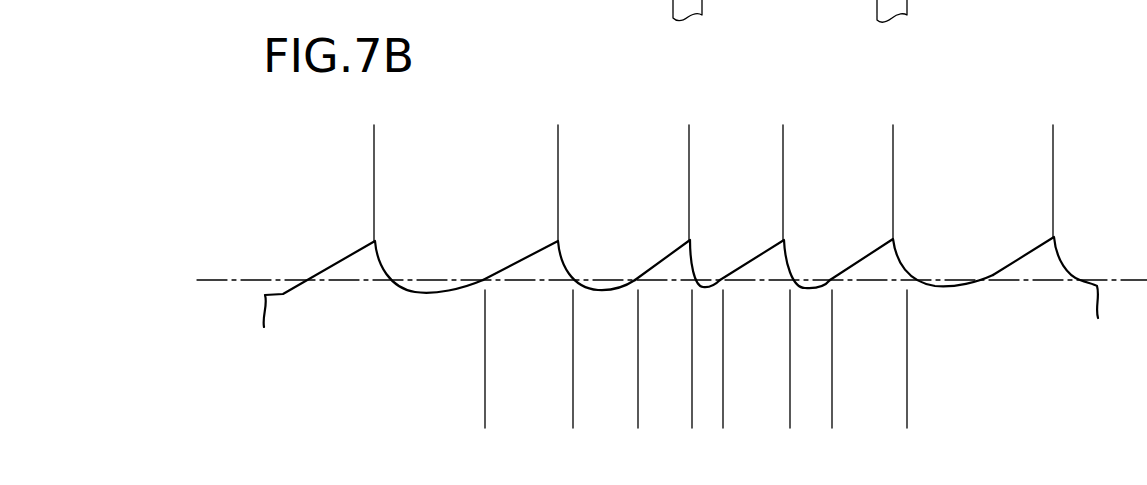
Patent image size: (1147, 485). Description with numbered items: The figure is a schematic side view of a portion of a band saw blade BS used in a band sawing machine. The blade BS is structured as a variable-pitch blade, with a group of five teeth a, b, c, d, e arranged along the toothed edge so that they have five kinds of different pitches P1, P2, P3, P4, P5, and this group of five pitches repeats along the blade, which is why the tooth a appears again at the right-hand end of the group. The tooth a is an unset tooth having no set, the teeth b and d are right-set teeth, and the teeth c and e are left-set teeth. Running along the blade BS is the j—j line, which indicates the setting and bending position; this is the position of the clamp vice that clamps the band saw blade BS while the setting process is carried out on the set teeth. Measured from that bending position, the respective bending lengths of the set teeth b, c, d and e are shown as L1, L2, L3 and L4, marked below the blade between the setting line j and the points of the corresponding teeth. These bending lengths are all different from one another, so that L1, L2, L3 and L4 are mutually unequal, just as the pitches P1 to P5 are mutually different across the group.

The band saw blade BS is at (1031, 80).
The j—j line j is at (672, 262).
The a tooth a is at (362, 258).
The b tooth b is at (548, 256).
The c tooth c is at (678, 255).
The d tooth d is at (770, 255).
The e tooth e is at (878, 252).
The pitch P1 is at (558, 143).
The pitch P2 is at (558, 143).
The pitch P3 is at (689, 143).
The pitch P4 is at (893, 143).
The pitch P5 is at (1053, 143).
The bending length L1 is at (485, 423).
The bending length L2 is at (638, 423).
The bending length L3 is at (790, 423).
The bending length L4 is at (832, 423).